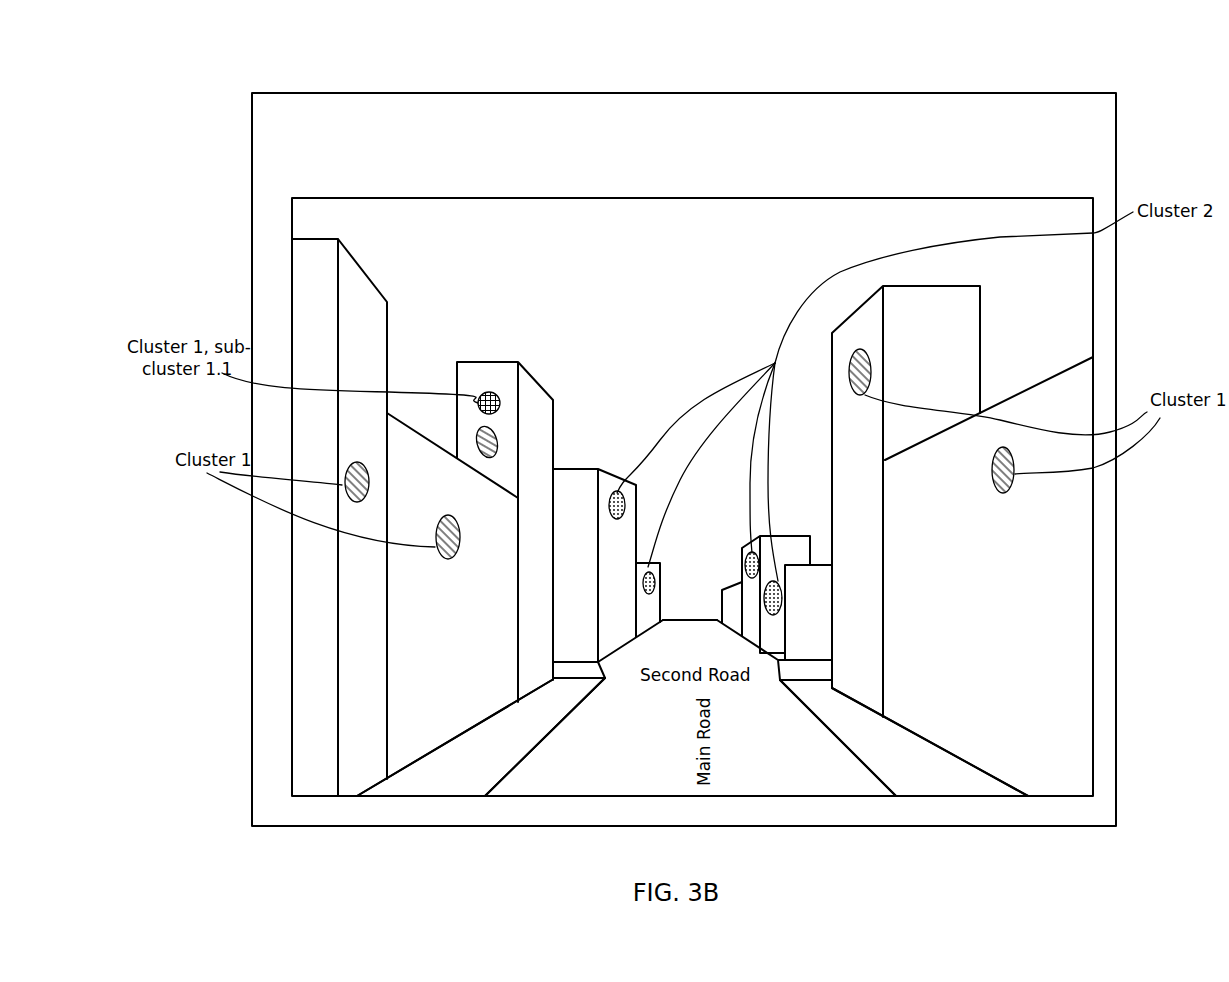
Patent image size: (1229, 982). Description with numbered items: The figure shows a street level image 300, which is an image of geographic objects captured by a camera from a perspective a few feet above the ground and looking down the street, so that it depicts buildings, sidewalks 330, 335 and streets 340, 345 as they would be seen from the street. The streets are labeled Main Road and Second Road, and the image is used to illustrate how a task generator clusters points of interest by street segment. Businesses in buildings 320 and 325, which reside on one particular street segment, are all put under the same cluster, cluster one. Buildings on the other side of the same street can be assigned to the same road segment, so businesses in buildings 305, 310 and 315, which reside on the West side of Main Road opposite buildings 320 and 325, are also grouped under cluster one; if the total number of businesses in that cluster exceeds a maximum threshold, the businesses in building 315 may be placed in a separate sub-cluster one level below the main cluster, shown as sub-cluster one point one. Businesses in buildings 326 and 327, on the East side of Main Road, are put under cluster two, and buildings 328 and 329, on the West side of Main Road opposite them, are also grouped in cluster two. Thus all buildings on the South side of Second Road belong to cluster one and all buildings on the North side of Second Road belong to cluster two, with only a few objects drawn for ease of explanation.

The street level image 300 is at (651, 34).
The building 305 is at (308, 318).
The building 310 is at (413, 616).
The building 315 is at (533, 648).
The building 320 is at (963, 367).
The building 325 is at (1057, 556).
The building 326 is at (807, 598).
The building 327 is at (790, 548).
The building 328 is at (577, 487).
The building 329 is at (783, 683).
The sidewalk 330 is at (455, 778).
The sidewalk 335 is at (927, 783).
The street 340 is at (725, 763).
The street 345 is at (753, 678).